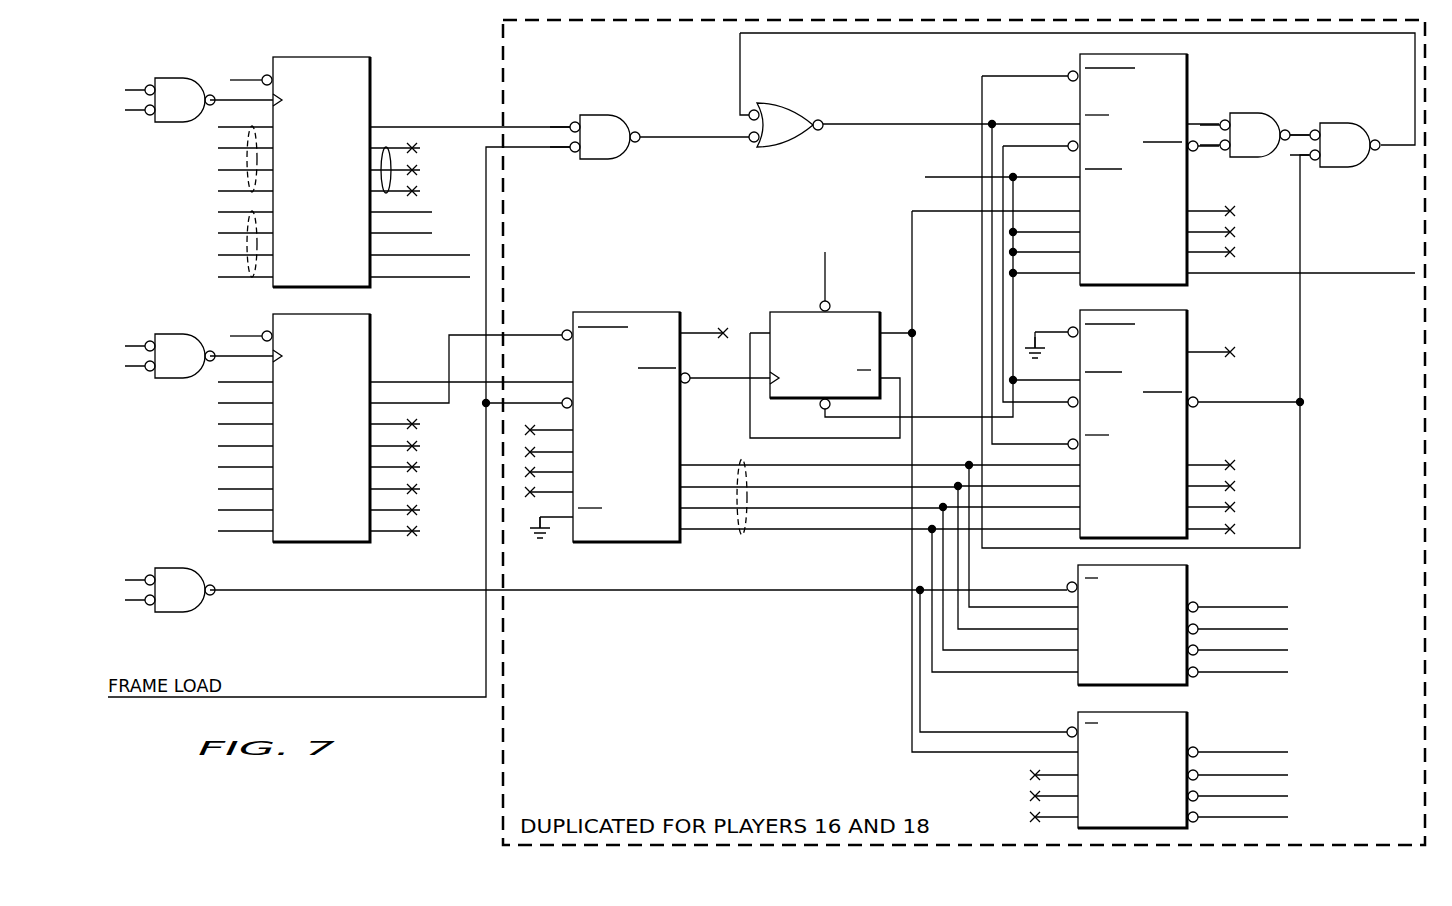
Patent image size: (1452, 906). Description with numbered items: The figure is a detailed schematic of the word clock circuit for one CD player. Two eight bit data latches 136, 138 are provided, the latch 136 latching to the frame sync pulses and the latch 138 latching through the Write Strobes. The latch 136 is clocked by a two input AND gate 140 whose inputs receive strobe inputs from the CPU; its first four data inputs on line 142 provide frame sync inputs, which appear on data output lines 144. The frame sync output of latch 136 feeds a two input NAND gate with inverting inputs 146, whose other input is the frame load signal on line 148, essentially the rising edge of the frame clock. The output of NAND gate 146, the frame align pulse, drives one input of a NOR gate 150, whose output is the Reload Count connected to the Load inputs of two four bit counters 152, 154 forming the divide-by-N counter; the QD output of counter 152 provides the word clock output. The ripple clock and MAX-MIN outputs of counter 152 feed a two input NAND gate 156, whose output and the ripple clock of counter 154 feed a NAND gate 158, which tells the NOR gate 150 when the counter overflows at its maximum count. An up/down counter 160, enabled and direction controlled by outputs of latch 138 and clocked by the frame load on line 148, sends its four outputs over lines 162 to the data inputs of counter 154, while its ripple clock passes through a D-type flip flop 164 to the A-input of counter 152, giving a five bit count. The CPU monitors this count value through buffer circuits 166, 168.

The eight bit data latch 136 is at (360, 92).
The eight bit data latch 138 is at (360, 348).
The two input AND gate 140 is at (197, 111).
The line 142 is at (248, 193).
The data output lines 144 is at (392, 166).
The two input NAND gate with inverting inputs 146 is at (624, 148).
The line 148 is at (428, 590).
The NOR gate 150 is at (801, 135).
The four bit counter 152 is at (1146, 221).
The four bit counter 154 is at (1146, 441).
The two input NAND gate 156 is at (1274, 145).
The two input NAND gate 158 is at (1364, 155).
The up/down counter 160 is at (661, 429).
The lines 162 is at (742, 536).
The D-type flip flop 164 is at (840, 366).
The buffer circuit 166 is at (1146, 742).
The buffer circuit 168 is at (1146, 595).